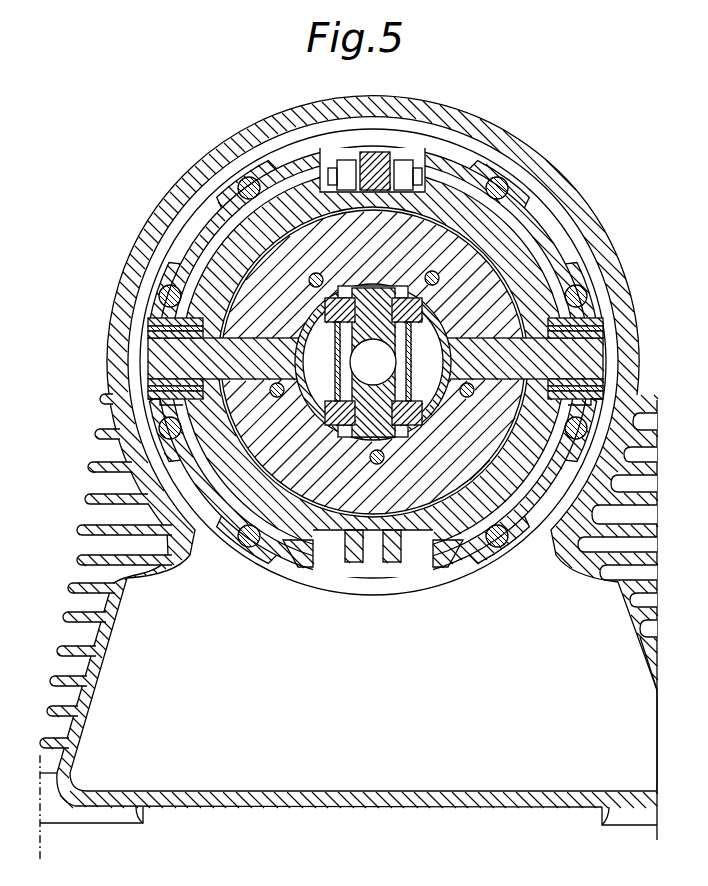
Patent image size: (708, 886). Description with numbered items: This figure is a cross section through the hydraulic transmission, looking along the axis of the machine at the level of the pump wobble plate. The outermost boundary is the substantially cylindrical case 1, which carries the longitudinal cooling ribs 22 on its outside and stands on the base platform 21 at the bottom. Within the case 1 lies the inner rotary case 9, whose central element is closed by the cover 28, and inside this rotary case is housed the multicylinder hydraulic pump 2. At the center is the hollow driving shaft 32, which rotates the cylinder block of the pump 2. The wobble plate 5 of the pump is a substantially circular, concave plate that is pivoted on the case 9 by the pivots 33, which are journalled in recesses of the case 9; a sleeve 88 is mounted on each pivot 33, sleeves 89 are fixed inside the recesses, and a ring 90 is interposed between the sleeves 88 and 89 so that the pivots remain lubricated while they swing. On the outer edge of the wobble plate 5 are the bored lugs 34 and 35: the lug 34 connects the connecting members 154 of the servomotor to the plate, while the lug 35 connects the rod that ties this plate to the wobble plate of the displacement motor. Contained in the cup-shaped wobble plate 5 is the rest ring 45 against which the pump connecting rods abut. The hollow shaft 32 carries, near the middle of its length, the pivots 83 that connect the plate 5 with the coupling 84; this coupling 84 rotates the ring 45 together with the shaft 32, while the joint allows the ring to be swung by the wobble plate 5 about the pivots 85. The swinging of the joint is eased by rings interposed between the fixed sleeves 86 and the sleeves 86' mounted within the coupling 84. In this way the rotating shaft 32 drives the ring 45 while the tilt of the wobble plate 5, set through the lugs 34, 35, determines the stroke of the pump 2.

The case 1 is at (628, 375).
The multicylinder hydraulic pump 2 is at (350, 452).
The wobble plate 5 is at (500, 226).
The case 9 is at (212, 200).
The base platform 21 is at (55, 818).
The longitudinal cooling ribs 22 is at (97, 555).
The cover 28 is at (556, 232).
The hollow driving shaft portion 32 is at (387, 293).
The pivots 33 is at (190, 343).
The bored lug 34 is at (400, 163).
The bored lug 35 is at (403, 437).
The rest ring 45 is at (535, 540).
The pivots 83 is at (357, 433).
The coupling 84 is at (453, 290).
The pivots 85 is at (262, 328).
The sleeves 86 is at (317, 384).
The sleeves 86' is at (428, 387).
The sleeve 88 is at (163, 328).
The sleeves 89 is at (183, 405).
The ring 90 is at (175, 383).
The connecting members 154 is at (357, 163).